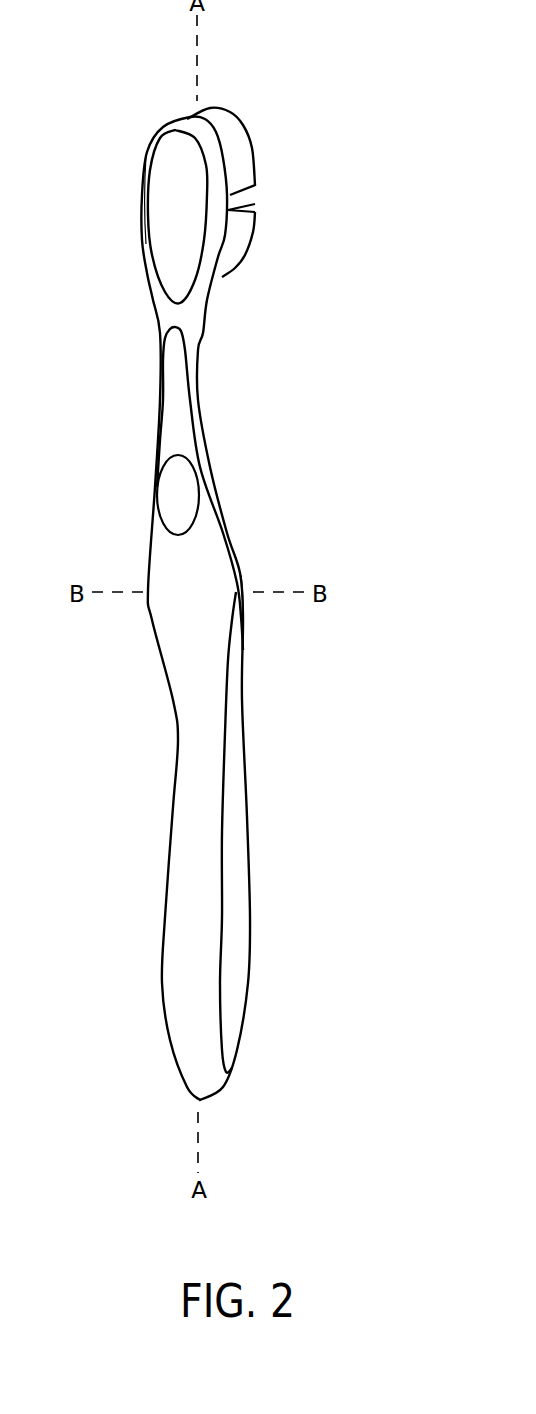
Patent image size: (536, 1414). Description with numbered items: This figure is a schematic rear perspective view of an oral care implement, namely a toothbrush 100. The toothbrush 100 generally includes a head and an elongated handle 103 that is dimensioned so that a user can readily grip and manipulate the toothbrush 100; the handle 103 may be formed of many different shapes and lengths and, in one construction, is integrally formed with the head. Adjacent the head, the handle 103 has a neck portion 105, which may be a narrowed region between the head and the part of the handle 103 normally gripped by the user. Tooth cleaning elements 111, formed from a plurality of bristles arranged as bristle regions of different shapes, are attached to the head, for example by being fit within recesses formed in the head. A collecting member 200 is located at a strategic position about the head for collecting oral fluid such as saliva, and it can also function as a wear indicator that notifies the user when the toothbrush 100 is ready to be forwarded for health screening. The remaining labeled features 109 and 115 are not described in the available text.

The toothbrush 100 is at (244, 80).
The collecting member 200 is at (222, 177).
The head front face 109 is at (146, 172).
The tooth cleaning elements 111 is at (254, 240).
The neck portion 105 is at (173, 412).
The handle side edge 115 is at (245, 587).
The handle 103 is at (192, 812).